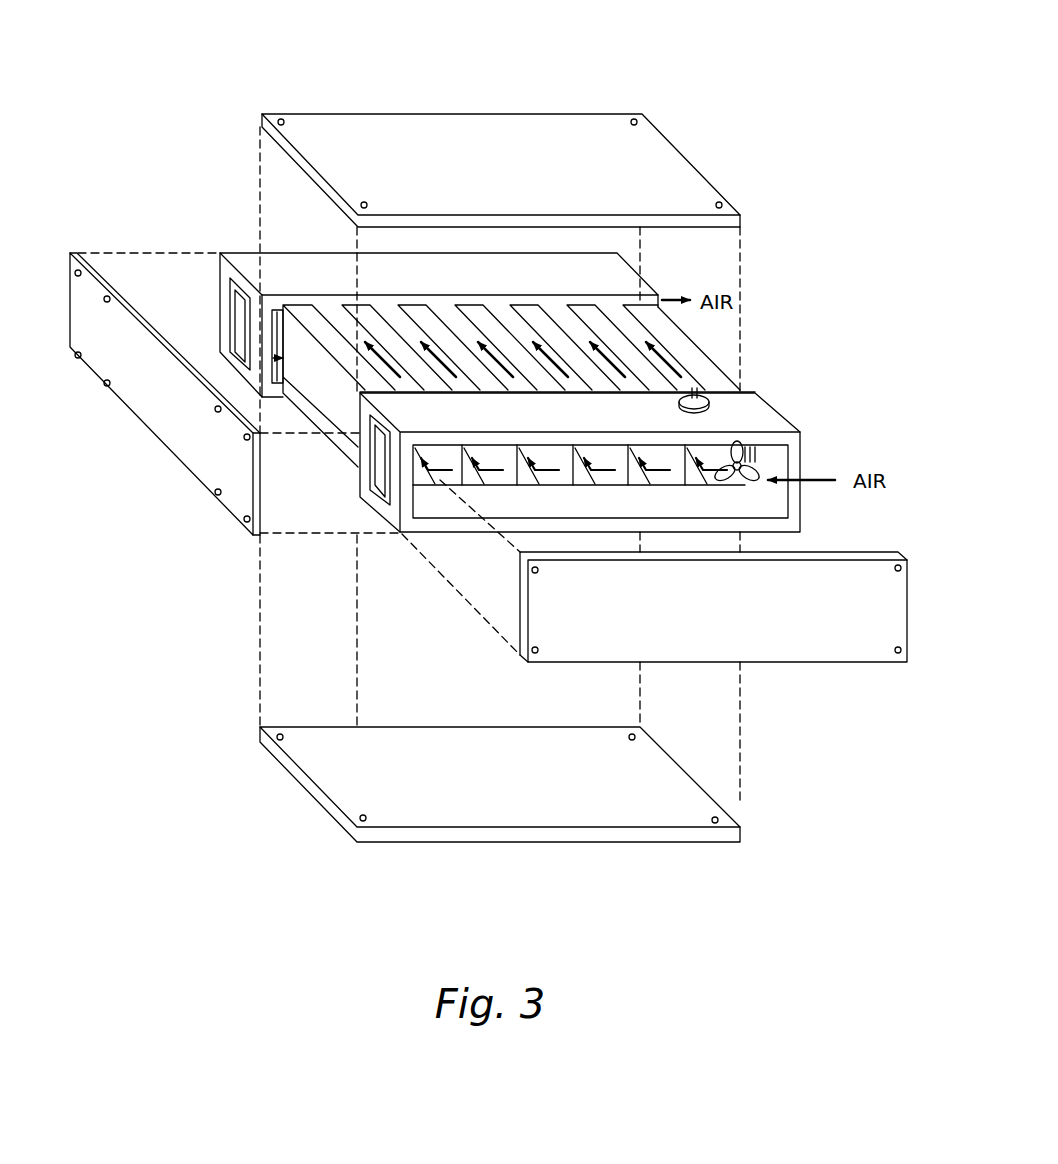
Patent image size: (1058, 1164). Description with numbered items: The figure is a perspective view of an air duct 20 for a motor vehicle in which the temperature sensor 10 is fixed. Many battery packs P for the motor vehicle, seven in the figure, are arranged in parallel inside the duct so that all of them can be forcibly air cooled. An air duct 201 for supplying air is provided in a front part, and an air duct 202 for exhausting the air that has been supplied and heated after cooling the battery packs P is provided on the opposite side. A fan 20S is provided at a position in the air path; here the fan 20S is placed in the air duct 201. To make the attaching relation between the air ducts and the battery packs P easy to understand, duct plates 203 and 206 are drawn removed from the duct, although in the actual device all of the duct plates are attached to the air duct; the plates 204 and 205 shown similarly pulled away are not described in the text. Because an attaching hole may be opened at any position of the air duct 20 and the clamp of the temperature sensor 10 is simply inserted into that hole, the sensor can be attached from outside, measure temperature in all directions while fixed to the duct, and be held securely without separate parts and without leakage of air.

The temperature sensor 10 is at (722, 390).
The air duct 20 is at (795, 416).
The fan 20S is at (770, 488).
The air duct 201 is at (432, 525).
The air duct 202 is at (252, 265).
The duct plate 203 is at (182, 448).
The bottom plate 204 is at (497, 835).
The front plate 205 is at (788, 655).
The duct plate 206 is at (585, 118).
The battery pack P is at (673, 380).